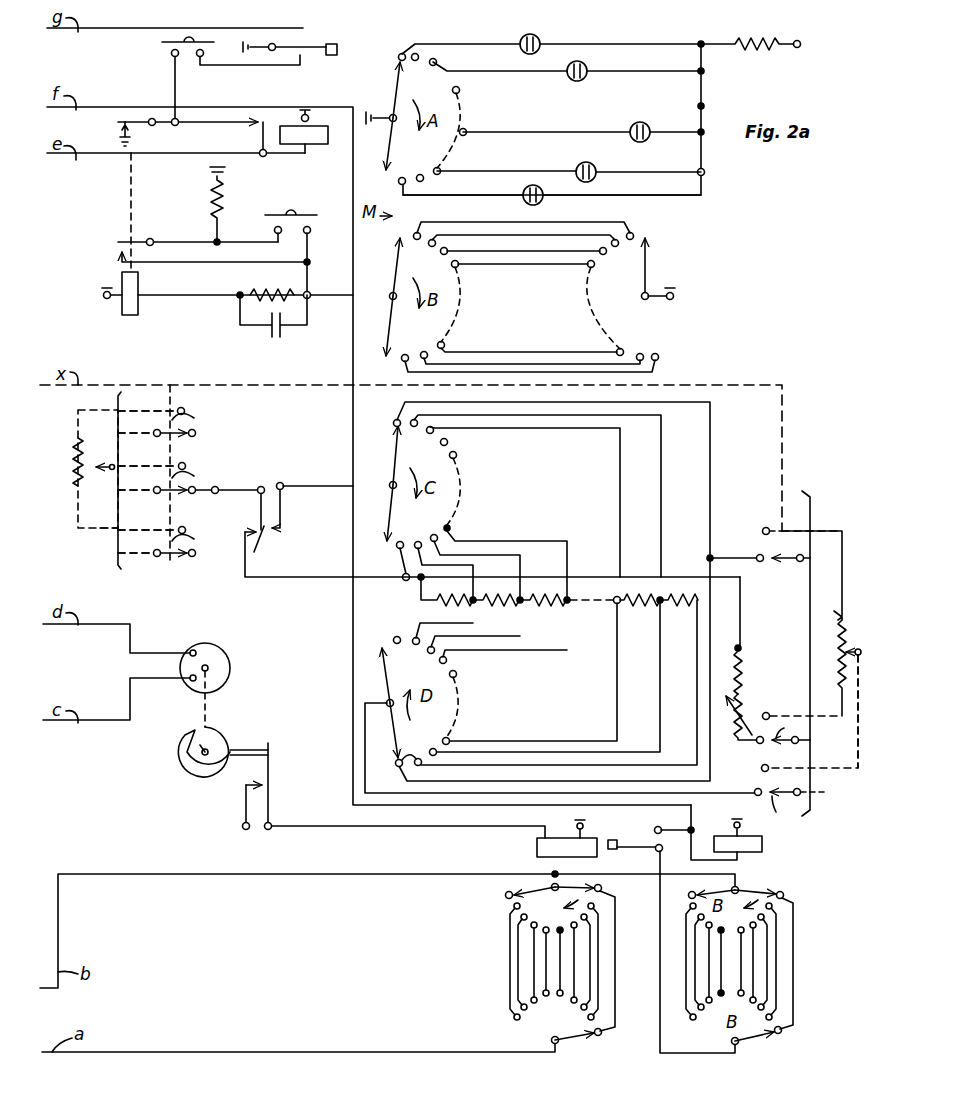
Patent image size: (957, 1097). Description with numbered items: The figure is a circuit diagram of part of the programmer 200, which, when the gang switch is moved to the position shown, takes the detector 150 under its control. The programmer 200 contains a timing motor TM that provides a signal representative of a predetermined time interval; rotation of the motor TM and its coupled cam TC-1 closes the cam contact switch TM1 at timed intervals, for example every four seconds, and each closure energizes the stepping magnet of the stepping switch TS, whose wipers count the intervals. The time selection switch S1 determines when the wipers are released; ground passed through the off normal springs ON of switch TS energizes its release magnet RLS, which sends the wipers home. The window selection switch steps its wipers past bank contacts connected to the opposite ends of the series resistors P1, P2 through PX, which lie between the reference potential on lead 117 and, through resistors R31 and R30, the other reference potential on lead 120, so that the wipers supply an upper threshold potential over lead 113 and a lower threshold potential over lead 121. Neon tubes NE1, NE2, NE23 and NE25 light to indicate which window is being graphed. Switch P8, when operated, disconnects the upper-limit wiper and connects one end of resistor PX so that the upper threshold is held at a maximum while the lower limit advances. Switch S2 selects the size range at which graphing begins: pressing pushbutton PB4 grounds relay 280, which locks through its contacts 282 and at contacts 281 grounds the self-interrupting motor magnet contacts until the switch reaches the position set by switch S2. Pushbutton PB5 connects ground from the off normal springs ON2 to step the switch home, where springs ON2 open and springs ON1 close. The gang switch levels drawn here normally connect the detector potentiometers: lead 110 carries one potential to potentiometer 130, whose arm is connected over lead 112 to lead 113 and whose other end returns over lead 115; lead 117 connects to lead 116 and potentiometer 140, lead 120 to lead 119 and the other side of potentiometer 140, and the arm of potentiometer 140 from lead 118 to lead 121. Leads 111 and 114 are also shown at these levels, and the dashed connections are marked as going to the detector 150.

The programmer 200 is at (717, 91).
The relay 280 is at (120, 302).
The contacts of relay 280 281 is at (116, 122).
The contacts of relay 280 282 is at (115, 248).
The lead 110 is at (114, 408).
The switch terminal 111 is at (147, 436).
The lead 112 is at (152, 466).
The lead 113 is at (152, 493).
The switch terminal 114 is at (158, 530).
The lead 115 is at (156, 555).
The lead 116 is at (818, 528).
The lead 117 is at (838, 556).
The lead 118 is at (842, 770).
The lead 119 is at (828, 712).
The lead 120 is at (806, 740).
The lead 121 is at (824, 792).
The potentiometer 130 is at (74, 495).
The potentiometer 140 is at (836, 624).
The detector apparatus 150 is at (104, 504).
The push button PB5 is at (172, 58).
The pushbutton PB4 is at (312, 214).
The off normal springs ON1 is at (303, 37).
The off normal springs ON2 is at (304, 60).
The neon tube NE1 is at (520, 42).
The neon tube NE2 is at (567, 74).
The neon tube NE23 is at (576, 167).
The neon tube NE25 is at (523, 192).
The switch S2 is at (539, 297).
The switch P8 is at (271, 542).
The resistor PX is at (430, 600).
The resistor P2 is at (642, 604).
The resistor P1 is at (692, 602).
The resistor R31 is at (742, 660).
The resistor R30 is at (742, 708).
The timing motor TM is at (224, 678).
The cam TC-1 is at (216, 722).
The cam contact switch TM1 is at (262, 788).
The stepping switch TS is at (535, 866).
The off normal springs ON is at (630, 840).
The release magnet RLS is at (738, 836).
The time selection switch S1 is at (565, 973).